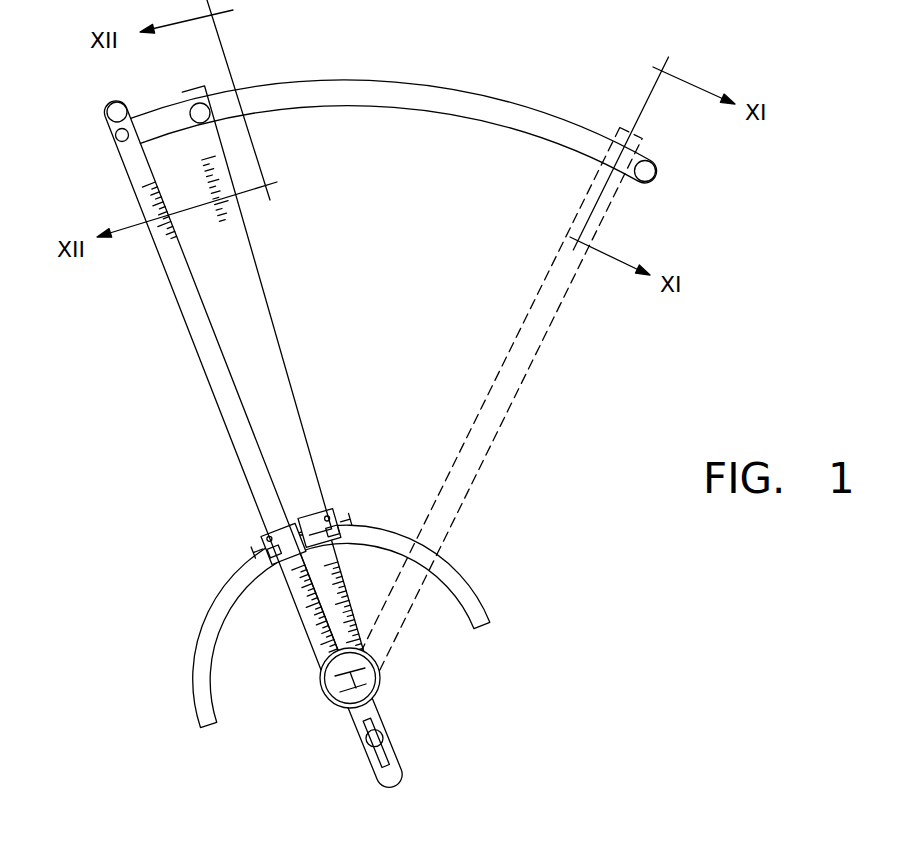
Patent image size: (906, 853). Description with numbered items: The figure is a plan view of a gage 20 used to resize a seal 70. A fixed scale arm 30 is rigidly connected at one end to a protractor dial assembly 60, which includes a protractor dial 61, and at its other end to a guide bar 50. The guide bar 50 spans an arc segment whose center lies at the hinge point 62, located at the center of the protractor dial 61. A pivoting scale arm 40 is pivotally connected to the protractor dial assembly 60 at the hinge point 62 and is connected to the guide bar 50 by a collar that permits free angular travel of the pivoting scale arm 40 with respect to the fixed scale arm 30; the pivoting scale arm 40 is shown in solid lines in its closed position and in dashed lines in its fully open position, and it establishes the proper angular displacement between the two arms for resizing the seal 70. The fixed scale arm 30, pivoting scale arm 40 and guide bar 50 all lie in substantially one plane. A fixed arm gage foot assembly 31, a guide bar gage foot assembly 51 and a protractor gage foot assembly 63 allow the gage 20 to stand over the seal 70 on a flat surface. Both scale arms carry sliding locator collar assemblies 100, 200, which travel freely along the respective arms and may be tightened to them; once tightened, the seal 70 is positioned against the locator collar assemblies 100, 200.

The gage 20 is at (378, 412).
The fixed scale arm 30 is at (125, 168).
The fixed arm gage foot assembly 31 is at (108, 106).
The pivoting scale arm 40 is at (213, 145).
The guide bar 50 is at (447, 95).
The guide bar gage foot assembly 51 is at (656, 171).
The protractor dial assembly 60 is at (386, 730).
The protractor dial 61 is at (367, 672).
The hinge point 62 is at (326, 698).
The protractor gage foot assembly 63 is at (385, 745).
The seal 70 is at (457, 585).
The sliding locator collar assembly 100 is at (258, 525).
The sliding locator collar assembly 200 is at (333, 500).